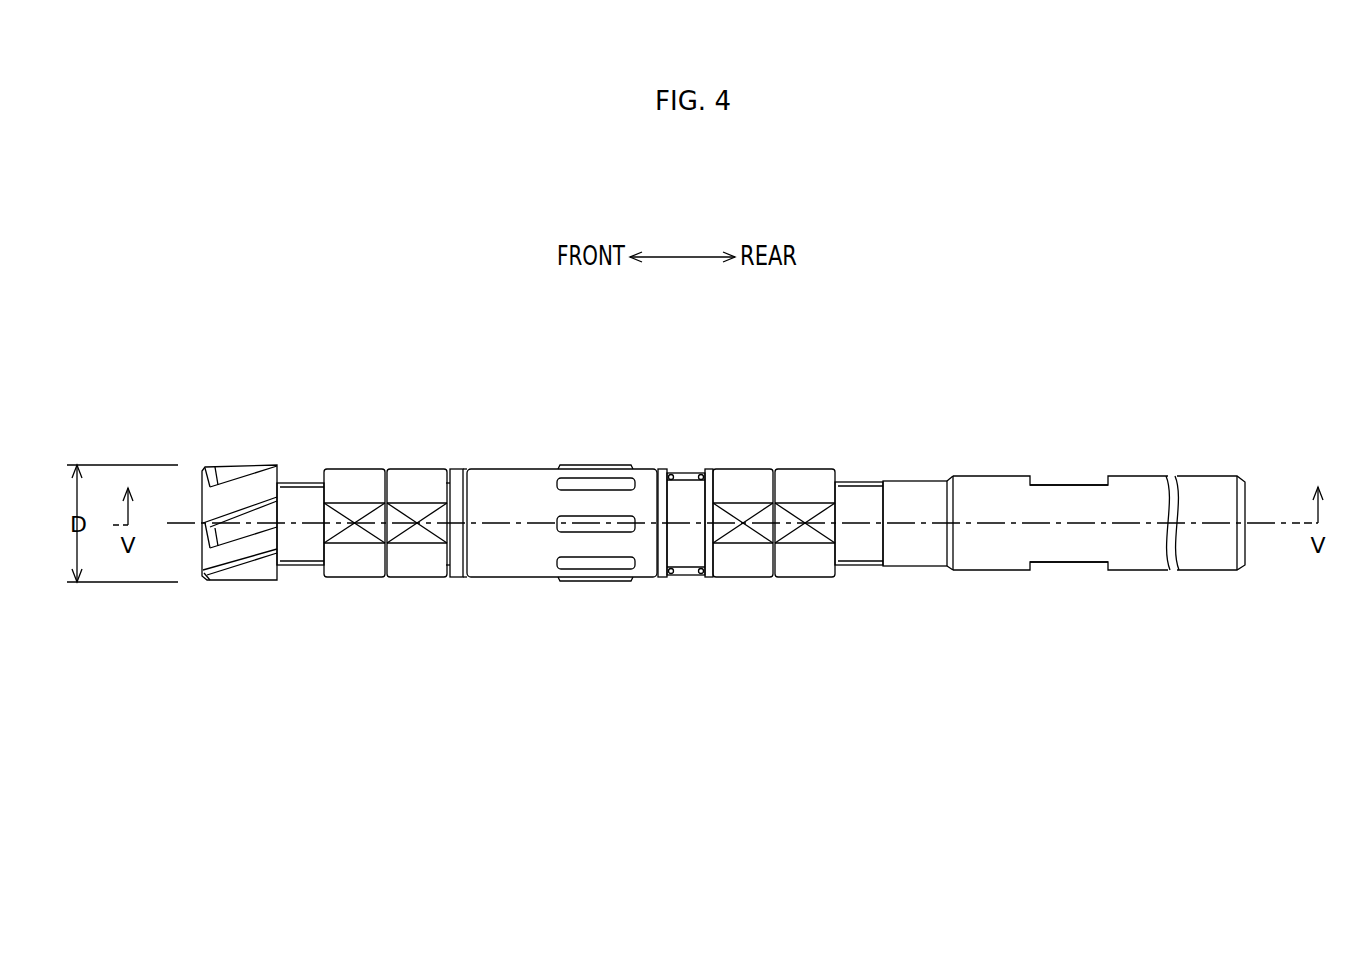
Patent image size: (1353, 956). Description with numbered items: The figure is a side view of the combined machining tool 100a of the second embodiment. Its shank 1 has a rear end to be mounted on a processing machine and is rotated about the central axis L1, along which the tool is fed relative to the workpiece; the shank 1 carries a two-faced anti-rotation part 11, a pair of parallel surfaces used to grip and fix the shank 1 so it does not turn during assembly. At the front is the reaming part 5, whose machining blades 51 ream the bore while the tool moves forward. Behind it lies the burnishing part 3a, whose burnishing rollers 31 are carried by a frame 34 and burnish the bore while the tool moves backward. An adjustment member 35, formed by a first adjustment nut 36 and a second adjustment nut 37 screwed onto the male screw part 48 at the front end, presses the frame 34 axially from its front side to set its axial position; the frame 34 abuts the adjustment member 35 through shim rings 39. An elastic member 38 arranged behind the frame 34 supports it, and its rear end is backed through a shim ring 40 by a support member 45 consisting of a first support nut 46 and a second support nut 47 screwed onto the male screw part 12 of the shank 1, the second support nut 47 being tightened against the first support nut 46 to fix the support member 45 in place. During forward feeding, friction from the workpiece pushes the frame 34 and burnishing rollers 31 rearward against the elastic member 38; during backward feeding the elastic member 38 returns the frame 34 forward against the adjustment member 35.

The shank 1 is at (1148, 422).
The burnishing part 3a is at (481, 415).
The reaming part 5 is at (253, 435).
The anti-rotation part 11 is at (1062, 480).
The male screw part 12 is at (862, 480).
The burnishing rollers 31 is at (567, 525).
The frame 34 is at (512, 468).
The adjustment member 35 is at (438, 410).
The first adjustment nut 36 is at (410, 470).
The second adjustment nut 37 is at (360, 470).
The elastic member 38 is at (697, 470).
The shim rings 39 is at (464, 580).
The shim ring 40 is at (660, 578).
The support member 45 is at (833, 410).
The first support nut 46 is at (755, 470).
The second support nut 47 is at (803, 470).
The male screw part 48 is at (302, 470).
The machining blades 51 is at (207, 468).
The combined machining tool 100a is at (974, 312).
The central axis L1 is at (1200, 527).